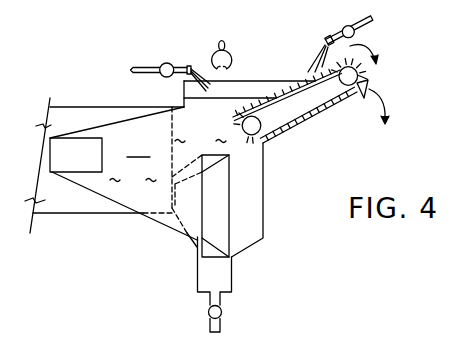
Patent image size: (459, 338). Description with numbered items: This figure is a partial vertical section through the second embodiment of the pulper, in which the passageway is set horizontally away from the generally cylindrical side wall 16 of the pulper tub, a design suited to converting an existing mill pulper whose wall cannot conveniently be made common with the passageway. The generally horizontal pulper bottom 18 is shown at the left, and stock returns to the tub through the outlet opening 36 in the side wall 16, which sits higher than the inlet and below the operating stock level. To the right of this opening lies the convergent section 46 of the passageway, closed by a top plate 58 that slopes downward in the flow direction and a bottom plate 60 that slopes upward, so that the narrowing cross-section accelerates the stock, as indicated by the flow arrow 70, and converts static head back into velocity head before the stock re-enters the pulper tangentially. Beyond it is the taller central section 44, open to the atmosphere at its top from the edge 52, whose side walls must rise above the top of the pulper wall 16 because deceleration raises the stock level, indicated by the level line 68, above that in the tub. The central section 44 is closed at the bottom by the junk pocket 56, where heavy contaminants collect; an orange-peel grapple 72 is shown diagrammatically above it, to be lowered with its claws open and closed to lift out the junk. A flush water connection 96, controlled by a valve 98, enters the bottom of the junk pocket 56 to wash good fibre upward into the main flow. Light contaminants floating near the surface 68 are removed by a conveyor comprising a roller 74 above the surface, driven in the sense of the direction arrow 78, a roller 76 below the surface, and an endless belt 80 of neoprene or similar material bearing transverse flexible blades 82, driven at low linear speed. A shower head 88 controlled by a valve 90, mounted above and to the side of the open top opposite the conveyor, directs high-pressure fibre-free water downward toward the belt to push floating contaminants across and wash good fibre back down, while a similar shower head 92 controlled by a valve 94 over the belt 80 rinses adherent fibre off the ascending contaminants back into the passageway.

The side wall 16 is at (42, 168).
The pulper bottom 18 is at (93, 214).
The outlet opening 36 is at (97, 146).
The central section 44 is at (199, 188).
The convergent section 46 is at (133, 179).
The edge 52 is at (183, 85).
The junk pocket 56 is at (224, 277).
The top plate 58 is at (93, 128).
The bottom plate 60 is at (85, 188).
The level line 68 is at (255, 97).
The flow arrow 70 is at (139, 148).
The orange-peel grapple 72 is at (232, 55).
The roller 74 is at (369, 79).
The roller 76 is at (228, 206).
The direction arrow 78 is at (365, 47).
The endless belt 80 is at (313, 110).
The transverse flexible blades 82 is at (242, 116).
The shower head 88 is at (188, 65).
The valve 90 is at (163, 63).
The shower head 92 is at (325, 37).
The valve 94 is at (345, 25).
The flush water connection 96 is at (221, 297).
The valve 98 is at (208, 314).